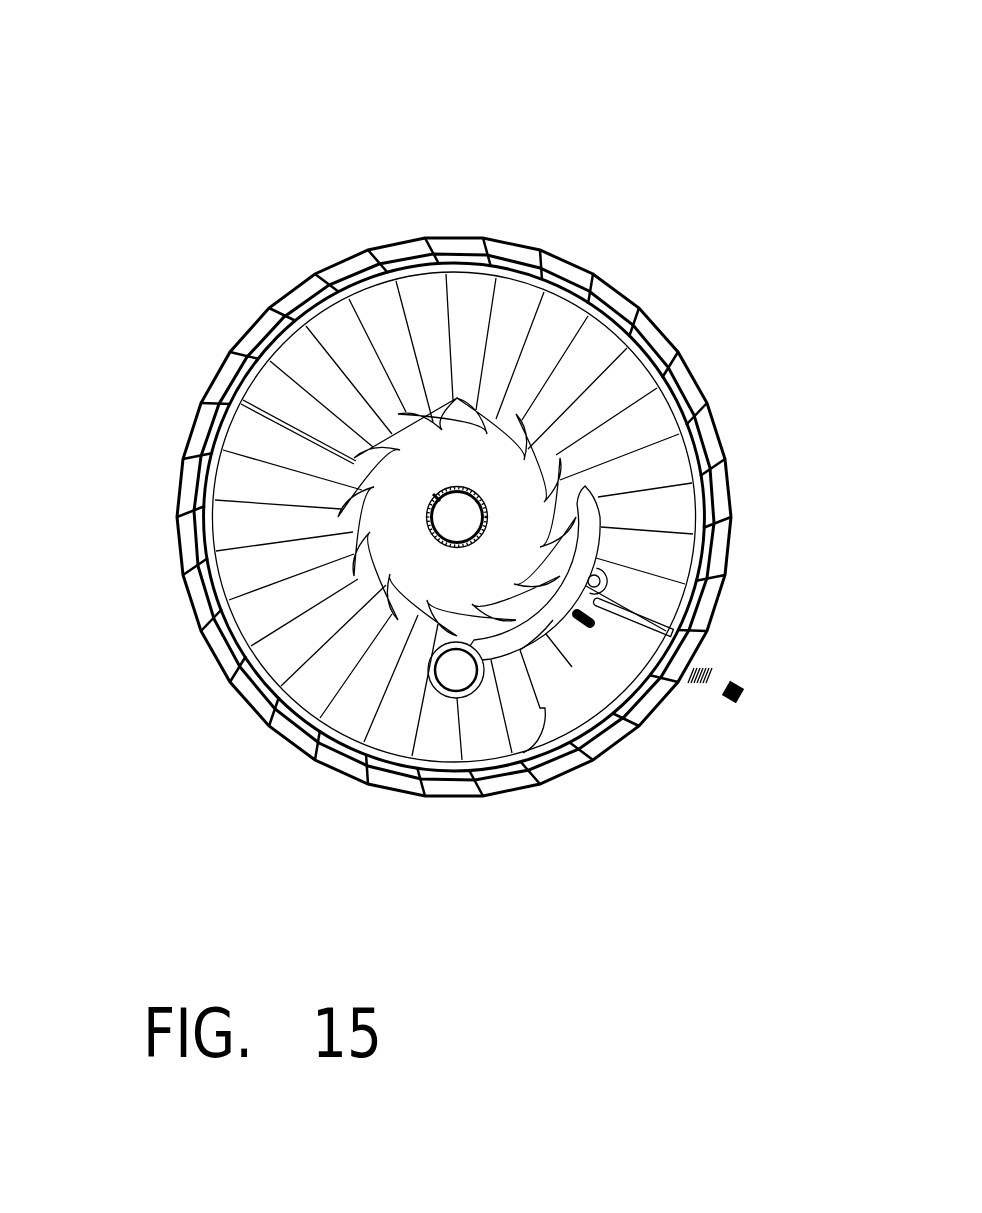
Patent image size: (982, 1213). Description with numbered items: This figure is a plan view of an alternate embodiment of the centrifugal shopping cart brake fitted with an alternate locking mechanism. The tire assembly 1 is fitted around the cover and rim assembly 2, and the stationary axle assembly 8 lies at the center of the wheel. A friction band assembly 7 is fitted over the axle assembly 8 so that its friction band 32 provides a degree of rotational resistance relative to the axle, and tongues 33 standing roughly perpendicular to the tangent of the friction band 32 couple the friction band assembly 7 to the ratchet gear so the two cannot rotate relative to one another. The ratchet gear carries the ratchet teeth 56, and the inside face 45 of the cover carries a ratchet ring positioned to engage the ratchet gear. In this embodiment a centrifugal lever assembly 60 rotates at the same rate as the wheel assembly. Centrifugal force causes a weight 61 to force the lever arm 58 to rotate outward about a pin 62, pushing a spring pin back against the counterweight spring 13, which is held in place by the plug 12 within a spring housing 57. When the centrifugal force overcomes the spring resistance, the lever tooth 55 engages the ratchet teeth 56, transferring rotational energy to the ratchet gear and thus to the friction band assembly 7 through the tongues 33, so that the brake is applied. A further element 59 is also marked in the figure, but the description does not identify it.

The tire assembly 1 is at (284, 280).
The cover and rim assembly 2 is at (566, 276).
The friction band assembly 7 is at (432, 545).
The axle assembly 8 is at (455, 493).
The plug 12 is at (743, 702).
The counterweight spring 13 is at (712, 665).
The friction band 32 is at (433, 527).
The tongues 33 is at (482, 507).
The inside face 45 is at (325, 435).
The lever tooth 55 is at (592, 527).
The ratchet teeth 56 is at (548, 491).
The spring housing 57 is at (600, 667).
The lever arm 58 is at (538, 625).
The stop pad 59 is at (590, 628).
The centrifugal lever assembly 60 is at (604, 582).
The weight 61 is at (448, 675).
The pin 62 is at (601, 579).